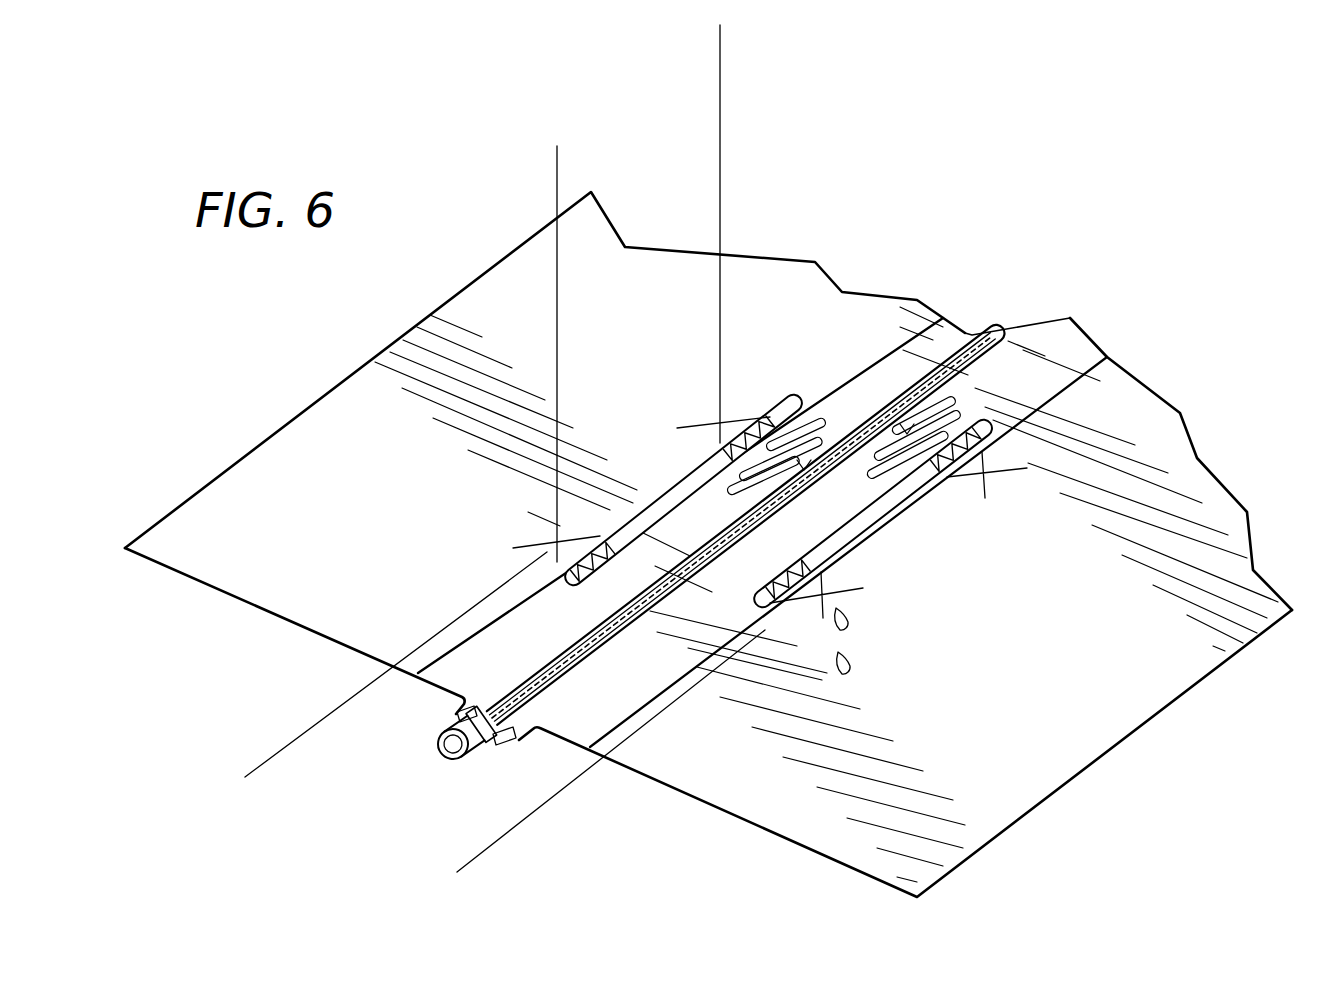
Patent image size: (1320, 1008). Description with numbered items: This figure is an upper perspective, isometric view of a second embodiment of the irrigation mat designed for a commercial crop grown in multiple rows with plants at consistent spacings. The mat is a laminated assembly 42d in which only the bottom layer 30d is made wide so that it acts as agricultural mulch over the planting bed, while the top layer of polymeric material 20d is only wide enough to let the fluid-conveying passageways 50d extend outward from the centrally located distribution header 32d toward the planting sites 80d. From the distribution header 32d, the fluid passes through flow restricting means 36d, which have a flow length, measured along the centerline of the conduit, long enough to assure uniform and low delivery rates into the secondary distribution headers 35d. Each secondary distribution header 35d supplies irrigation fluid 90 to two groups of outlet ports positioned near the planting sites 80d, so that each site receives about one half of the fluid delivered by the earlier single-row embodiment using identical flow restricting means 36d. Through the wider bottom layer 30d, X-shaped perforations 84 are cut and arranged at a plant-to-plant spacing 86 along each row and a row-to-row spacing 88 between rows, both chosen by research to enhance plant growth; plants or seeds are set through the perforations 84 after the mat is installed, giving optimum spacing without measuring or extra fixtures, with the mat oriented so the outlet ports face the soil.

The top layer of polymeric material 20d is at (1070, 342).
The bottom layer 30d is at (990, 822).
The distribution header 32d is at (1005, 330).
The laminated assembly 42d is at (946, 318).
The secondary distribution headers 35d is at (857, 530).
The flow restricting means 36d is at (793, 422).
The fluid-conveying passageways 50d is at (977, 410).
The planting sites 80d is at (553, 517).
The X-shaped perforations 84 is at (522, 548).
The plant-to-plant spacing 86 is at (720, 48).
The row-to-row spacing 88 is at (478, 848).
The irrigation fluid 90 is at (747, 802).